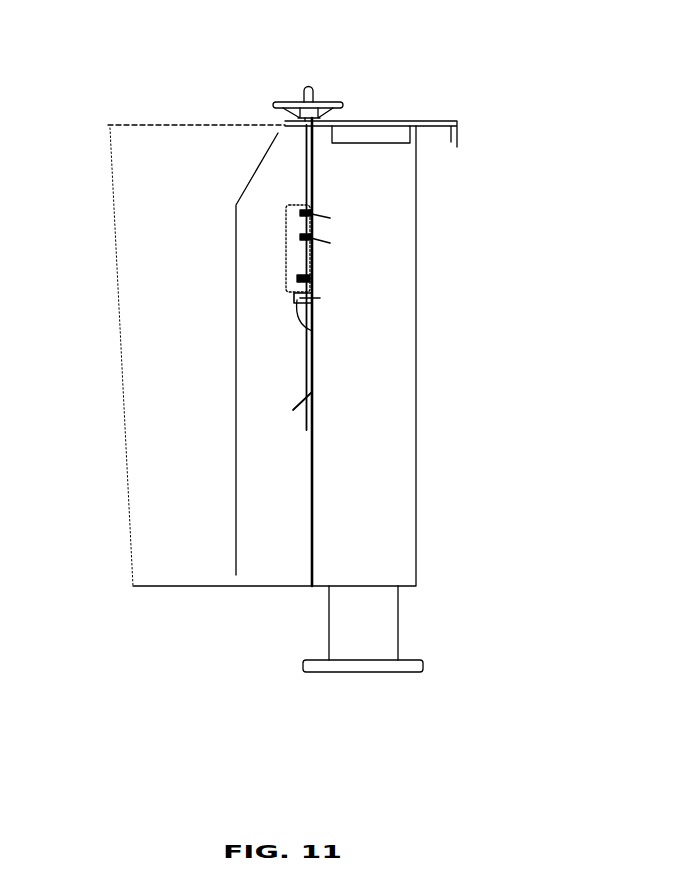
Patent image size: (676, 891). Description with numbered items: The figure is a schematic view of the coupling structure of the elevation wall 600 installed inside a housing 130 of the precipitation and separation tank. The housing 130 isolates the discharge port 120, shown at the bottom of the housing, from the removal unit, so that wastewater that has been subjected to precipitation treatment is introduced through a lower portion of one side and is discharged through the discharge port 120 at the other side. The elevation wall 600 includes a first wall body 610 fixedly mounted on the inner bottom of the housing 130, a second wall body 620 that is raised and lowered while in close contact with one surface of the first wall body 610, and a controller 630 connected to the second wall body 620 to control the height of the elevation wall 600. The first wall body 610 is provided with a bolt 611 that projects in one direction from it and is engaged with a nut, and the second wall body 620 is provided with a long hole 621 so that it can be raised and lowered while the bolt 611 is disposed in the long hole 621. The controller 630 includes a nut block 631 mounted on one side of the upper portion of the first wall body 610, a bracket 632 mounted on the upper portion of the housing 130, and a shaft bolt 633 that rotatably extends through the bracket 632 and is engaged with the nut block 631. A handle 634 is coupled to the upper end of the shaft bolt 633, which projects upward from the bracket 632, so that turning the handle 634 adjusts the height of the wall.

The discharge port 120 is at (378, 672).
The housing 130 is at (416, 193).
The elevation wall 600 is at (368, 90).
The first wall body 610 is at (313, 502).
The bolt 611 is at (312, 331).
The second wall body 620 is at (312, 371).
The long hole 621 is at (310, 338).
The controller 630 is at (190, 4).
The nut block 631 is at (288, 236).
The bracket 632 is at (350, 122).
The shaft bolt 633 is at (305, 100).
The handle 634 is at (334, 103).